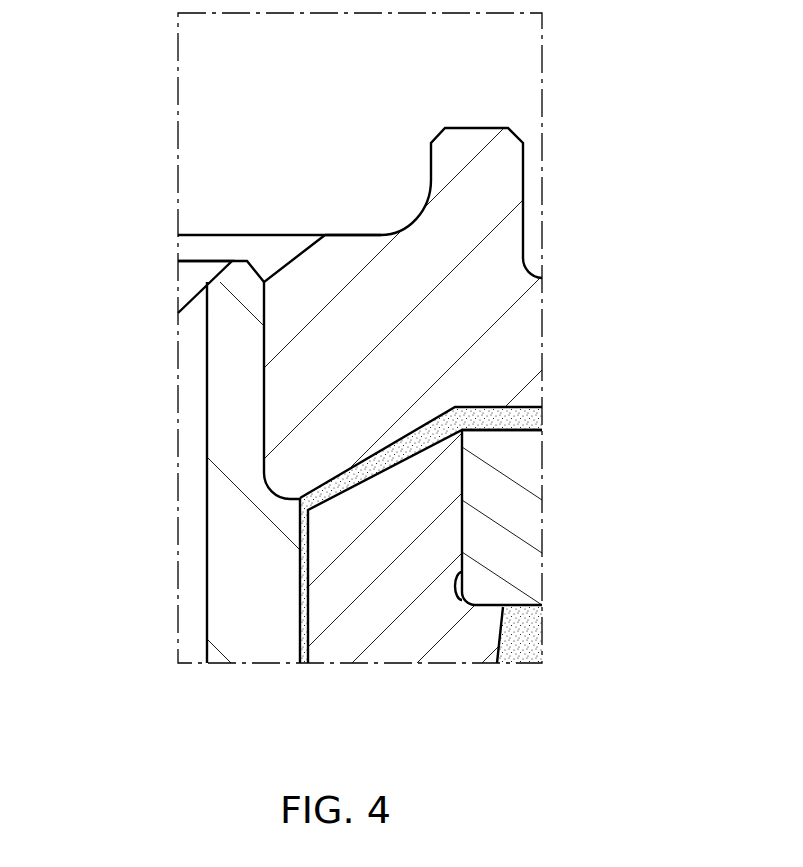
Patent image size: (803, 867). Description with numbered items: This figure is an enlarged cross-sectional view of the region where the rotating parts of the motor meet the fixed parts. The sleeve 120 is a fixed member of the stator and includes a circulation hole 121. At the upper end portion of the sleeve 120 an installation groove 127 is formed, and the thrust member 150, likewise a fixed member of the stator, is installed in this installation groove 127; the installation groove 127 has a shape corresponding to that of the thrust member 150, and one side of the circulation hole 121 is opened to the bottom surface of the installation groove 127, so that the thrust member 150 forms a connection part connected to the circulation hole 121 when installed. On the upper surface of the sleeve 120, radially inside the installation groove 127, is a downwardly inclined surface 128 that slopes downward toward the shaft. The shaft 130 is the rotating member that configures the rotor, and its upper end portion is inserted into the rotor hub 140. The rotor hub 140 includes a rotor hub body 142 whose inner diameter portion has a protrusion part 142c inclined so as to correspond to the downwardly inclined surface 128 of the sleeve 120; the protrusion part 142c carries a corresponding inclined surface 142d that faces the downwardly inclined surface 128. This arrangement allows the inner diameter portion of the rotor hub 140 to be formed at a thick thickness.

The sleeve 120 is at (413, 650).
The circulation hole 121 is at (528, 640).
The installation groove 127 is at (463, 512).
The downwardly inclined surface 128 is at (353, 482).
The shaft 130 is at (215, 368).
The rotor hub 140 is at (467, 250).
The rotor hub body 142 is at (492, 290).
The protrusion part 142c is at (305, 457).
The corresponding inclined surface 142d is at (463, 446).
The thrust member 150 is at (530, 523).